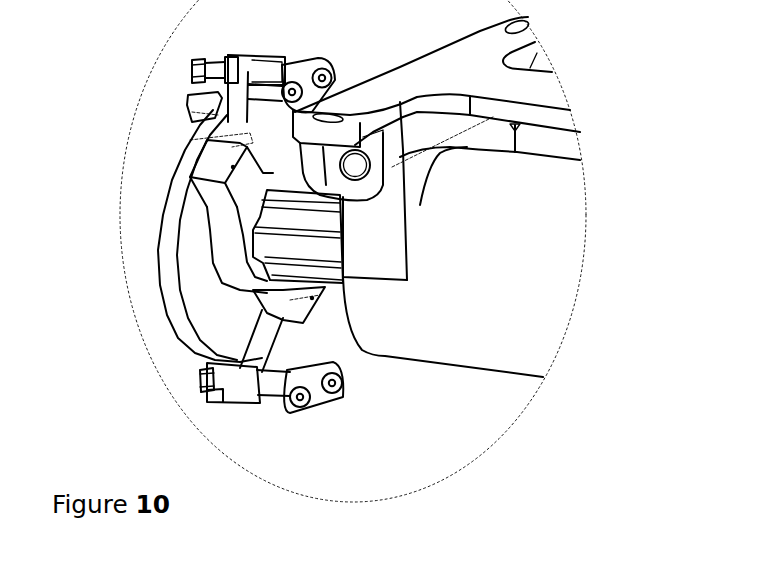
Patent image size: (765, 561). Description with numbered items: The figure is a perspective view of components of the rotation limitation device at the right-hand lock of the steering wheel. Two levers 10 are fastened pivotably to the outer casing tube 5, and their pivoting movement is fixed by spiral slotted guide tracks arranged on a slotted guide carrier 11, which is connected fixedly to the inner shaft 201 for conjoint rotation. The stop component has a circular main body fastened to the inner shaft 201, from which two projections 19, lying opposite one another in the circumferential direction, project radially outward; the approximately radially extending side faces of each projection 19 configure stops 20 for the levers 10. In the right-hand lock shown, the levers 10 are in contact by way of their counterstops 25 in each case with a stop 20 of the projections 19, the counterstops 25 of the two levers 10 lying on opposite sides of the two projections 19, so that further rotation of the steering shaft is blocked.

The outer casing tube 5 is at (538, 245).
The inner shaft 201 is at (303, 252).
The slotted guide carrier 11 is at (187, 287).
The projection 19 is at (210, 165).
The counterstop 25 is at (190, 139).
The stop 20 is at (195, 110).
The lever 10 is at (228, 110).